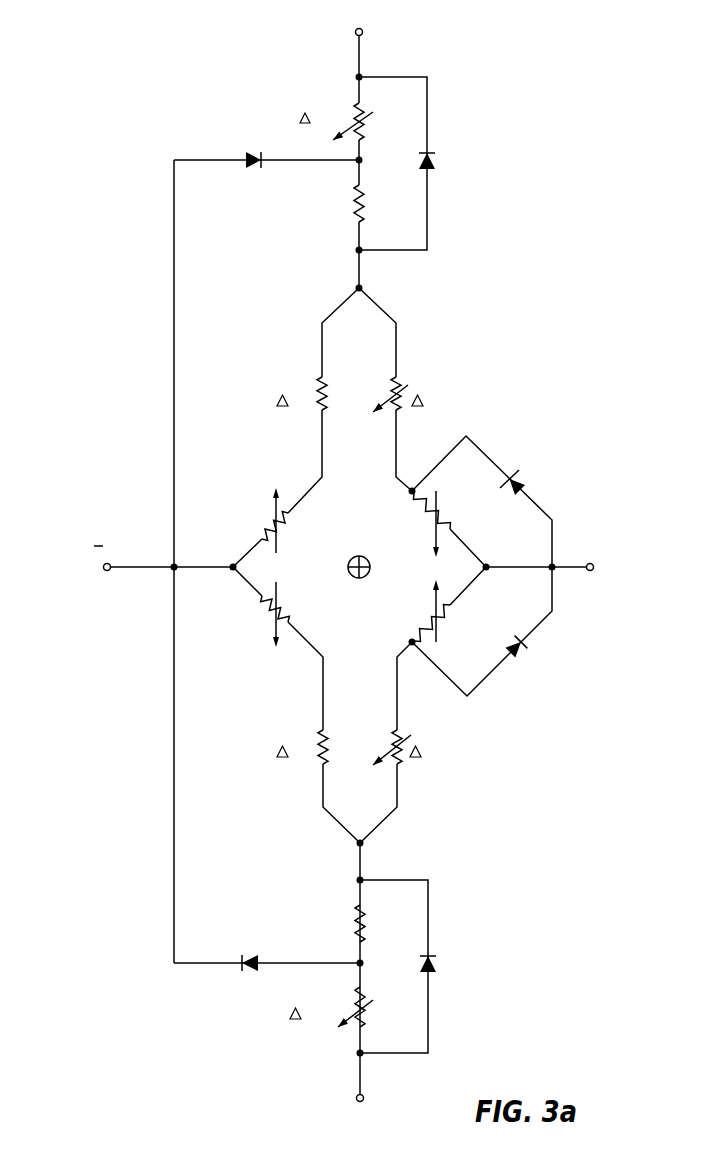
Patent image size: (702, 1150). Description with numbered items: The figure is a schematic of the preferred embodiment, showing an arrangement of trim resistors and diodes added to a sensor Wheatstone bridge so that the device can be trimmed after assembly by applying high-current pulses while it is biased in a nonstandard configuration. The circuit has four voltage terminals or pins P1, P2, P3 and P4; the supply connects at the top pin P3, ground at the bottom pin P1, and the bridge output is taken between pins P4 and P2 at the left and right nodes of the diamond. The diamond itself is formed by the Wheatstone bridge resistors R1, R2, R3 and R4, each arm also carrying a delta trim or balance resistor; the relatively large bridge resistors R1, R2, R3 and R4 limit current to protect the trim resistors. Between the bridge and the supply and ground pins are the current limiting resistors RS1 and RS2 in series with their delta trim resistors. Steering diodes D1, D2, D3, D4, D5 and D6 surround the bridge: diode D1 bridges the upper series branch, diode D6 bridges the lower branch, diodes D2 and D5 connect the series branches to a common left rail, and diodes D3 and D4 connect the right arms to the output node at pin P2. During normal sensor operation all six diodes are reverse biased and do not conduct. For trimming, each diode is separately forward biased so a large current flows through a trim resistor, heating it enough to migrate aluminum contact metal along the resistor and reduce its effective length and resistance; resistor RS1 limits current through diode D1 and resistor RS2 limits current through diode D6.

The voltage terminal P1 is at (358, 1113).
The voltage terminal P2 is at (572, 572).
The voltage terminal P3 is at (348, 25).
The voltage terminal P4 is at (142, 573).
The current limiting resistor RS1 is at (336, 162).
The current limiting resistor RS2 is at (331, 966).
The Wheatstone bridge resistor R1 is at (411, 522).
The Wheatstone bridge resistor R2 is at (411, 672).
The Wheatstone bridge resistor R3 is at (312, 584).
The Wheatstone bridge resistor R4 is at (294, 465).
The steering diode D1 is at (412, 163).
The steering diode D2 is at (266, 178).
The steering diode D3 is at (482, 501).
The steering diode D4 is at (482, 631).
The steering diode D5 is at (267, 981).
The steering diode D6 is at (415, 966).